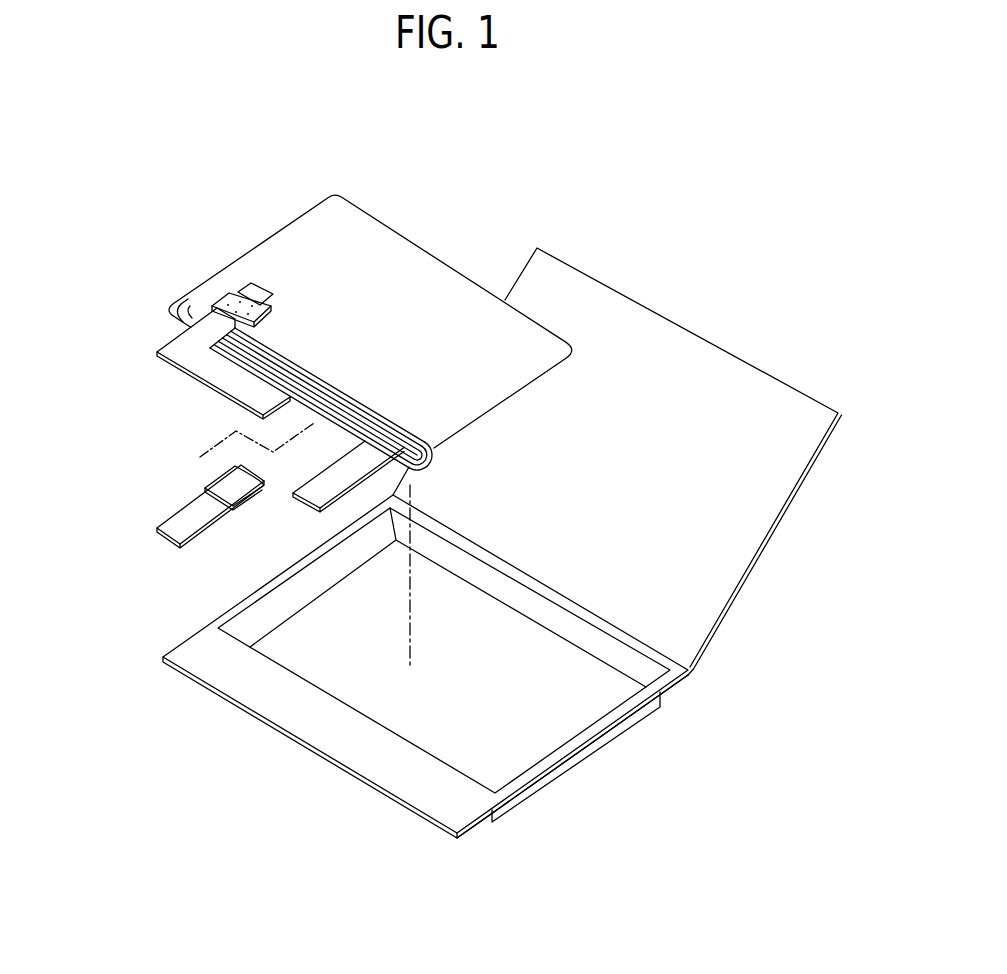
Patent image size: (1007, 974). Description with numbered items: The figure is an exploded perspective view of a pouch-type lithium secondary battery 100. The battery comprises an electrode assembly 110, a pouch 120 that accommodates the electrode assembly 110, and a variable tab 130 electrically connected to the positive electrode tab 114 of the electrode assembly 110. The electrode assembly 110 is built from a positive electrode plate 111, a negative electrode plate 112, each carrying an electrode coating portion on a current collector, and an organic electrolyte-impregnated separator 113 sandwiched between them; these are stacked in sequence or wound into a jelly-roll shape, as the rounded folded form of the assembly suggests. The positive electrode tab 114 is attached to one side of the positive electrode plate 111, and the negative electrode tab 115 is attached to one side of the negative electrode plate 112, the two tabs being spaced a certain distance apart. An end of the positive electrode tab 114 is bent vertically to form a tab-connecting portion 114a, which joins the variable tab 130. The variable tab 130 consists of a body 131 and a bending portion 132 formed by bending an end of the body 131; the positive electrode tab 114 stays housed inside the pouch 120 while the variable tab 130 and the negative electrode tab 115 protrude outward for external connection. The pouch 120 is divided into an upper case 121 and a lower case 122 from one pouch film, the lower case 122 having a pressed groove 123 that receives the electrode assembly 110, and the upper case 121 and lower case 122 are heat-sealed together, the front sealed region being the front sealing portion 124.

The pouch-type lithium secondary battery 100 is at (435, 151).
The electrode assembly 110 is at (252, 236).
The positive electrode plate 111 is at (327, 380).
The negative electrode plate 112 is at (383, 418).
The separator 113 is at (353, 398).
The positive electrode tab 114 is at (273, 416).
The tab-connecting portion 114a is at (232, 378).
The negative electrode tab 115 is at (302, 502).
The pouch 120 is at (502, 543).
The upper case 121 is at (617, 473).
The lower case 122 is at (592, 748).
The groove 123 is at (595, 705).
The front sealing portion 124 is at (320, 733).
The variable tab 130 is at (151, 497).
The body 131 is at (180, 518).
The bending portion 132 is at (220, 482).